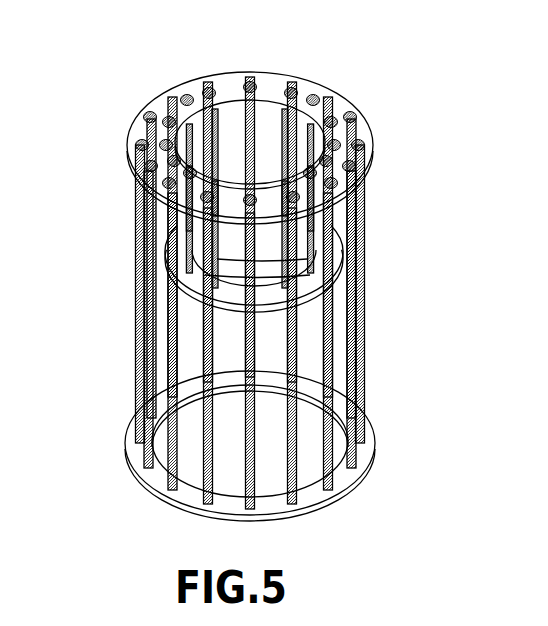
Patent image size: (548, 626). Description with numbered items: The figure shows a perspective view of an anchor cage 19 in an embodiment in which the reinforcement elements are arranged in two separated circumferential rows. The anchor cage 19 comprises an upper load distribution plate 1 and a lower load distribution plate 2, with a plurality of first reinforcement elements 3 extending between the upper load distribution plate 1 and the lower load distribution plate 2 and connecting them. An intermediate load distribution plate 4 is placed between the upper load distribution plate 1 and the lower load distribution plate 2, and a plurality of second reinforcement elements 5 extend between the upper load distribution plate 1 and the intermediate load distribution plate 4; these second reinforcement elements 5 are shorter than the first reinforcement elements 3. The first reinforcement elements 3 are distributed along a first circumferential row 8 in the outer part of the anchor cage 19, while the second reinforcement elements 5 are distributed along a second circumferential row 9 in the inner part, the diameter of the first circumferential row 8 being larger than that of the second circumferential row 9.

The upper load distribution plate 1 is at (133, 152).
The lower load distribution plate 2 is at (130, 450).
The first reinforcement elements 3 is at (355, 152).
The intermediate load distribution plate 4 is at (142, 258).
The second reinforcement elements 5 is at (338, 93).
The first circumferential row 8 is at (188, 83).
The second circumferential row 9 is at (200, 105).
The anchor cage 19 is at (410, 86).